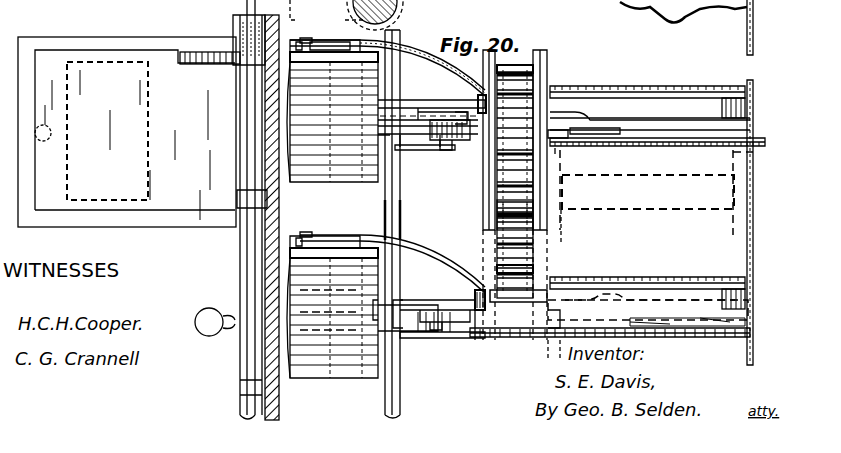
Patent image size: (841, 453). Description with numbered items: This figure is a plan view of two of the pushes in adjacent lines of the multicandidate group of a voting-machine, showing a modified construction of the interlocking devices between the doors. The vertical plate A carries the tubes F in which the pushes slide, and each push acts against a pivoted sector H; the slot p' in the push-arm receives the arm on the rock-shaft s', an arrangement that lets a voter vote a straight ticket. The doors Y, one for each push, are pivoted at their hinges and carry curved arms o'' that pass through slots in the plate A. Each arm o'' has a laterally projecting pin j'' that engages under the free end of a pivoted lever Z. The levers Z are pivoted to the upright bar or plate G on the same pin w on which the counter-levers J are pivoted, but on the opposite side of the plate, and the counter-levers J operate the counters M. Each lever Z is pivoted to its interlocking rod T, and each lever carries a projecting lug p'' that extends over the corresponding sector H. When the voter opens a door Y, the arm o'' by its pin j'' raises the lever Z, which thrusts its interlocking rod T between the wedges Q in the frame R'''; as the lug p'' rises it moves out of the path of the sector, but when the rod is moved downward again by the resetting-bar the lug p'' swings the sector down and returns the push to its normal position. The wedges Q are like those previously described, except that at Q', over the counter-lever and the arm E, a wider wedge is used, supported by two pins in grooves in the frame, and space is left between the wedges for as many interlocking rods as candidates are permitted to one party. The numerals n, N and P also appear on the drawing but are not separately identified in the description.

The door Y is at (127, 132).
The curved arm o'' is at (210, 38).
The rod n is at (243, 16).
The vertical plate A is at (270, 395).
The tube F is at (343, 224).
The lug or pin j'' is at (312, 123).
The rock-shaft s' is at (355, 15).
The arm E is at (640, 118).
The sector H is at (418, 348).
The pivoted lever Z is at (655, 268).
The slot p' is at (475, 89).
The projecting lug p'' is at (472, 284).
The frame R''' is at (530, 184).
The wider wedge Q' is at (496, 147).
The interlocking wedge Q is at (504, 251).
The interlocking rod T is at (555, 268).
The upright bar or plate G is at (698, 330).
The counter-lever J is at (560, 356).
The bar N is at (580, 148).
The counter M is at (650, 235).
The pin w is at (735, 289).
The frame P is at (753, 250).